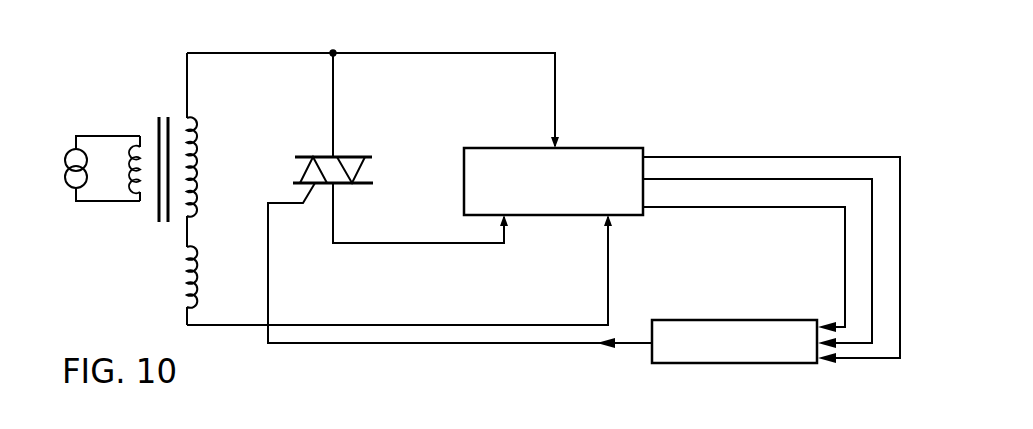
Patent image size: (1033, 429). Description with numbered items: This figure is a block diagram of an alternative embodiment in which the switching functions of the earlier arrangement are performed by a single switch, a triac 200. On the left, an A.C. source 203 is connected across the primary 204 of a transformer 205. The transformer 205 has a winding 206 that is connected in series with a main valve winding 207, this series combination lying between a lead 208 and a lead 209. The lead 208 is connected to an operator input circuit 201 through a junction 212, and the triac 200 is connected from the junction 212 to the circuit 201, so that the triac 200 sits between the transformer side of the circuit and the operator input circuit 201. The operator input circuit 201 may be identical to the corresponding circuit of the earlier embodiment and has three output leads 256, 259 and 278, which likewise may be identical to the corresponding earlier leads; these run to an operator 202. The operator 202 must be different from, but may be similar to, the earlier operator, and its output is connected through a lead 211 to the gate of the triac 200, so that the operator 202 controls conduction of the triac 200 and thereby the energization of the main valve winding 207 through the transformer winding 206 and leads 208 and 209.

The triac 200 is at (400, 138).
The operator input circuit 201 is at (610, 144).
The operator 202 is at (732, 308).
The A.C. source 203 is at (66, 153).
The primary 204 is at (136, 190).
The transformer 205 is at (145, 231).
The winding 206 is at (190, 150).
The main valve winding 207 is at (191, 280).
The lead 208 is at (243, 54).
The lead 209 is at (308, 315).
The lead 211 is at (378, 343).
The junction 212 is at (336, 56).
The output lead 256 is at (678, 157).
The output lead 259 is at (666, 181).
The output lead 278 is at (750, 207).